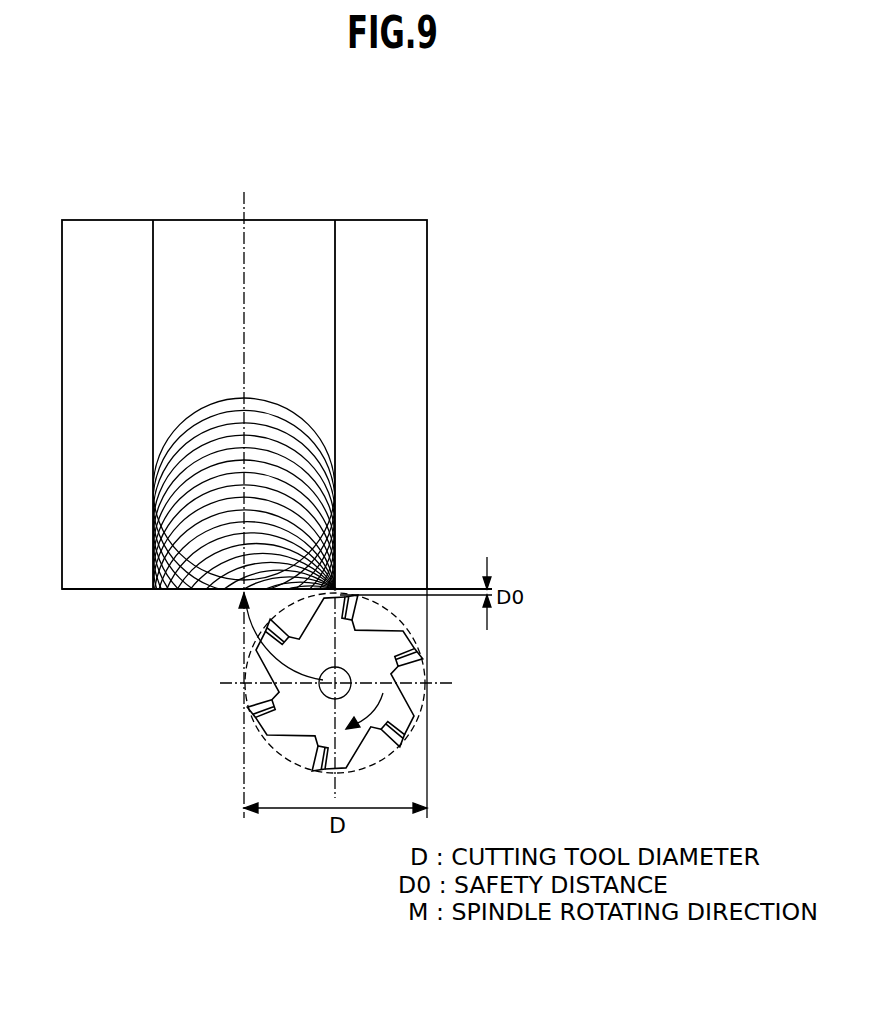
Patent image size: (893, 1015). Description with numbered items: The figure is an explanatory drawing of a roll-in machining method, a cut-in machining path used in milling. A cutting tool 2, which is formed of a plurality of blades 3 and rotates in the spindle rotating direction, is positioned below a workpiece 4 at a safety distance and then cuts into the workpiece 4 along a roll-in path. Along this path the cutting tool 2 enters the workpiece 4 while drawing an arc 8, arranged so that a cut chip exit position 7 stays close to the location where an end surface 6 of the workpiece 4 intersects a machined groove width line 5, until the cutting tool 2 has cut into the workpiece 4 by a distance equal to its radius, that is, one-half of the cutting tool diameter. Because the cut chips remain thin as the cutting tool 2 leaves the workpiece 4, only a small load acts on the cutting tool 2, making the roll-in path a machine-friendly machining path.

The cutting tool 2 is at (369, 683).
The blade 3 is at (406, 741).
The workpiece 4 is at (402, 316).
The machined groove width line 5 is at (335, 243).
The end surface 6 is at (118, 591).
The cut chip exit position 7 is at (335, 589).
The arc 8 is at (276, 663).